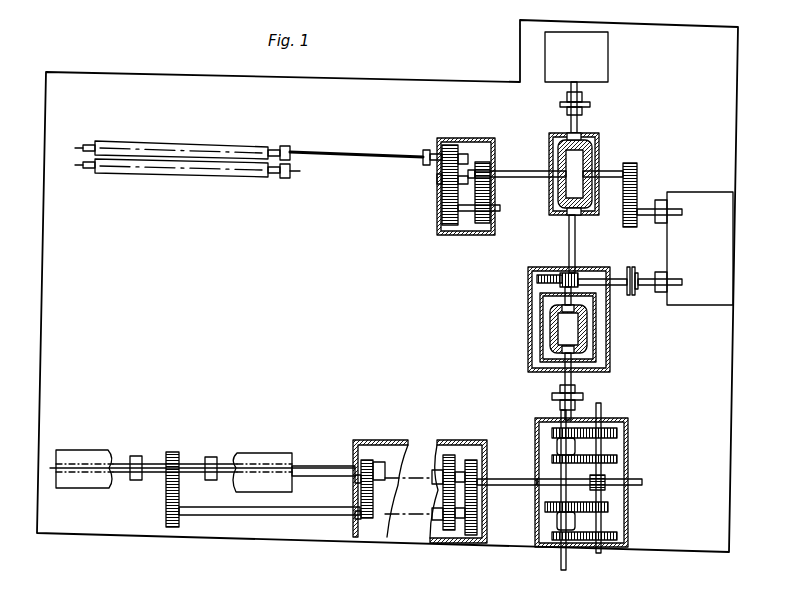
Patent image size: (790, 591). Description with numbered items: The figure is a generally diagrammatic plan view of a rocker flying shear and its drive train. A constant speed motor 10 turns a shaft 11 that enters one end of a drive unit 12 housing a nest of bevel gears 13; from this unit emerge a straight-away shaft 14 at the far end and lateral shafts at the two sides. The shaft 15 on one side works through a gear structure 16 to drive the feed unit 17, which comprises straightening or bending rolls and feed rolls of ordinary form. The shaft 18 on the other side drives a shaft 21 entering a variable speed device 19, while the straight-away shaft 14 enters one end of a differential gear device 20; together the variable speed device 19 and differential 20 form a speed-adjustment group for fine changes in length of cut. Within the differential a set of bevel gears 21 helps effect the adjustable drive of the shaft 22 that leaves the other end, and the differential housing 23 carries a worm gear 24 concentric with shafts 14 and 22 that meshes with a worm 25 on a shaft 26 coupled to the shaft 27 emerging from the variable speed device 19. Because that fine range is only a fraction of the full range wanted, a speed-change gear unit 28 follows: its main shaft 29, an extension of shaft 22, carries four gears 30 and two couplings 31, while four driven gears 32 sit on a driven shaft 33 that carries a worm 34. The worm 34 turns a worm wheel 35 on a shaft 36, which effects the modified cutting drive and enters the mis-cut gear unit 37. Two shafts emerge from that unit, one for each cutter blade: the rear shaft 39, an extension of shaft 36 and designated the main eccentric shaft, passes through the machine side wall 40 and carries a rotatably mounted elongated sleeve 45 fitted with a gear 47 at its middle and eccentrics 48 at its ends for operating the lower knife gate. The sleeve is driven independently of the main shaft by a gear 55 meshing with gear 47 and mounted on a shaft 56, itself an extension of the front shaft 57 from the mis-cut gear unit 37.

The constant speed motor 10 is at (608, 63).
The shaft 11 is at (582, 118).
The drive unit 12 is at (600, 140).
The nest of bevel gears 13 is at (592, 160).
The straight-away shaft 14 is at (576, 238).
The shaft 15 is at (528, 178).
The gear structure 16 is at (462, 228).
The feed unit 17 is at (218, 178).
The shaft 18 is at (612, 180).
The variable speed device 19 is at (703, 203).
The differential gear device 20 is at (608, 320).
The shaft / set of bevel gears 21 is at (646, 215).
The shaft 22 is at (572, 383).
The differential housing 23 is at (540, 305).
The worm gear 24 is at (545, 275).
The worm 25 is at (566, 280).
The shaft 26 is at (617, 292).
The shaft 27 is at (647, 292).
The speed-change gear unit 28 is at (612, 447).
The main shaft 29 is at (560, 415).
The gears 30 is at (552, 432).
The couplings 31 is at (553, 447).
The driven gears 32 is at (625, 425).
The driven shaft 33 is at (600, 452).
The worm 34 is at (603, 490).
The worm wheel 35 is at (605, 481).
The shaft 36 is at (527, 487).
The mis-cut gear unit 37 is at (432, 440).
The rear shaft (main eccentric shaft) 39 is at (322, 465).
The machine side wall 40 is at (293, 460).
The sleeve 45 is at (155, 462).
The gear 47 is at (179, 452).
The eccentrics 48 is at (138, 482).
The gear 55 is at (165, 516).
The shaft 56 is at (232, 516).
The front shaft 57 is at (349, 518).